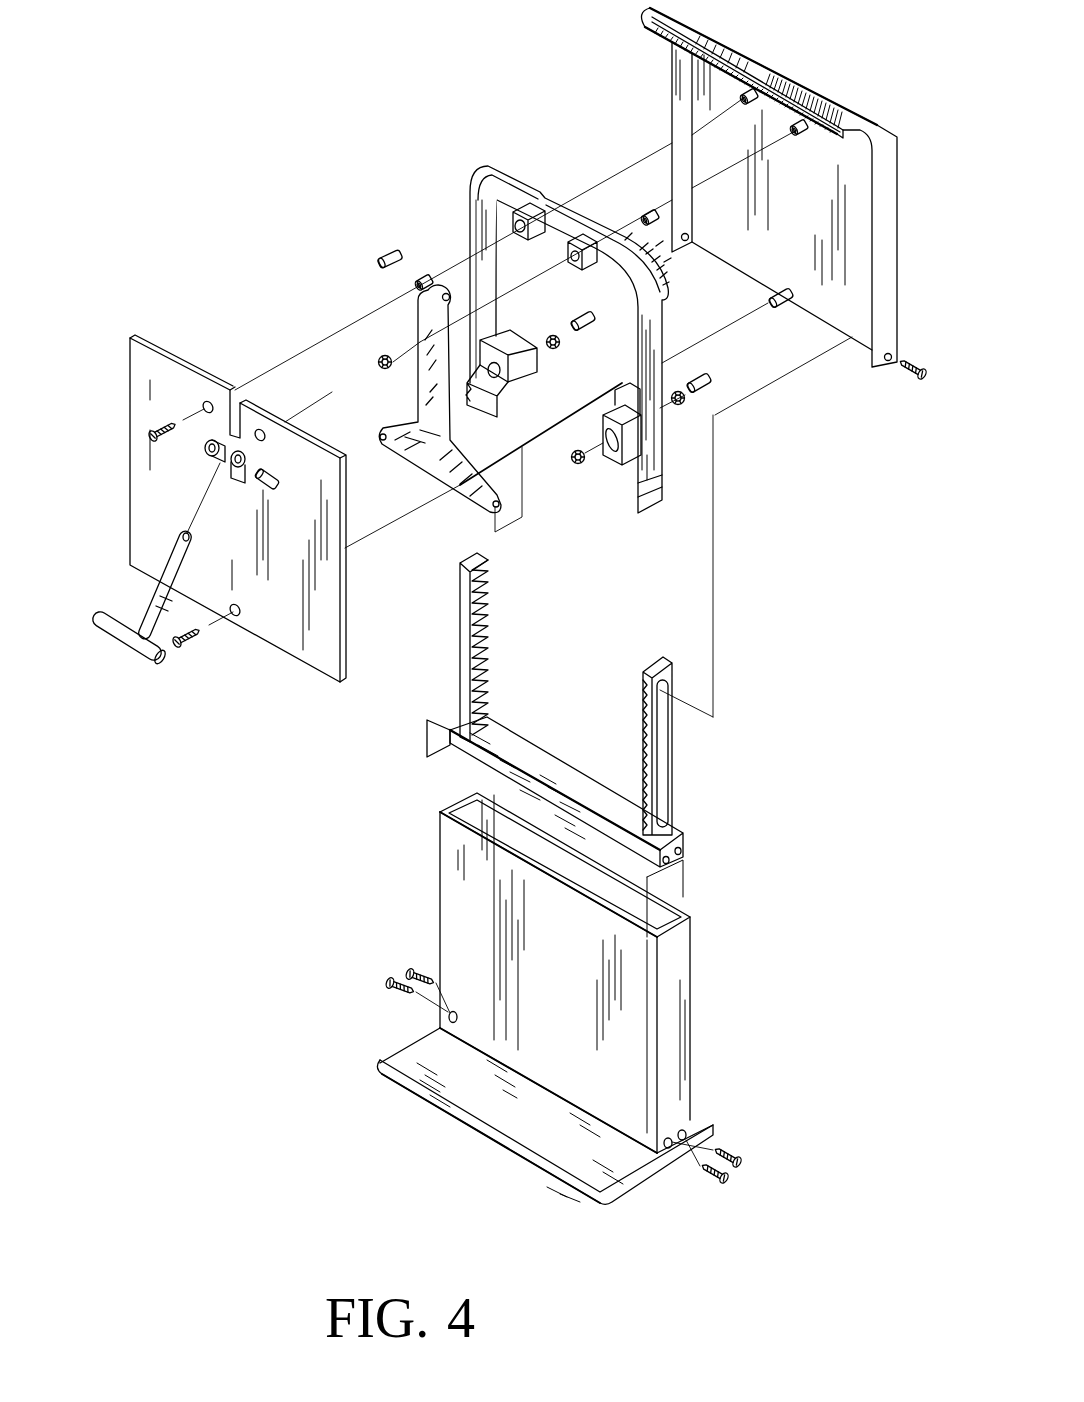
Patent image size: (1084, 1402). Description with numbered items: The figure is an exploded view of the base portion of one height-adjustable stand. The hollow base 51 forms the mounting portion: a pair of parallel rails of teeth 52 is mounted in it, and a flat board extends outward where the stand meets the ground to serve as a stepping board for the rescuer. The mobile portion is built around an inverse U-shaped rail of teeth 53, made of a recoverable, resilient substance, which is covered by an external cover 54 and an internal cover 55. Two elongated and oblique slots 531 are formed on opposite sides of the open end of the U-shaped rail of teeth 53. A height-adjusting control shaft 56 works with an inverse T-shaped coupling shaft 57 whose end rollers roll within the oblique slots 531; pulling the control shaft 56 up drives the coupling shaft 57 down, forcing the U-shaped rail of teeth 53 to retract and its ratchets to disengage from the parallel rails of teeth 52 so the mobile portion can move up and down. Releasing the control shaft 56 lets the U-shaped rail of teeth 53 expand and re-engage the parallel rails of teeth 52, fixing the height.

The hollow base 51 is at (680, 962).
The parallel rails of teeth 52 is at (668, 753).
The inverse U-shaped rail of teeth 53 is at (653, 452).
The elongated and oblique slots 531 is at (618, 465).
The external cover 54 is at (312, 652).
The internal cover 55 is at (890, 285).
The height-adjusting control shaft 56 is at (133, 653).
The inverse T-shaped coupling shaft 57 is at (463, 478).